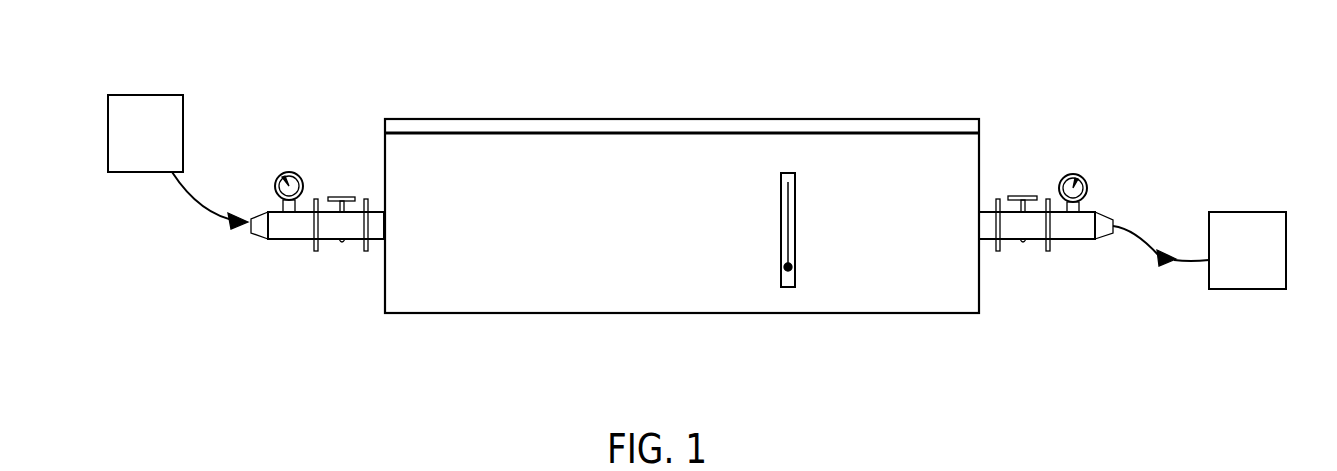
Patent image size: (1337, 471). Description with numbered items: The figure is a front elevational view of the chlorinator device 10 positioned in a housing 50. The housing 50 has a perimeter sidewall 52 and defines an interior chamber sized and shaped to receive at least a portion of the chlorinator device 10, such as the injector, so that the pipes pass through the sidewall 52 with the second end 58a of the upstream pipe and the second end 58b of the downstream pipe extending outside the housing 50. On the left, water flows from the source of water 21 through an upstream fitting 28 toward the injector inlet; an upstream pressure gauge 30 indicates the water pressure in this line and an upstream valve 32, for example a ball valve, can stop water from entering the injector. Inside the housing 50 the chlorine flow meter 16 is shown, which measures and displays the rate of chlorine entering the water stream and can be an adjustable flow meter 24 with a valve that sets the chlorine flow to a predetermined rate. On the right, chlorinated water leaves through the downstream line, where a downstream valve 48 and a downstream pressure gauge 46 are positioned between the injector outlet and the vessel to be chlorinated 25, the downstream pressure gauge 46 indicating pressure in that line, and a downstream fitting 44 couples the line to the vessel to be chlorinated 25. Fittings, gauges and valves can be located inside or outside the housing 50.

The chlorinator device 10 is at (1013, 93).
The source of water 21 is at (135, 147).
The vessel to be chlorinated 25 is at (1237, 264).
The upstream fitting 28 is at (248, 227).
The upstream pressure gauge 30 is at (294, 173).
The upstream valve 32 is at (342, 243).
The second end of upstream pipe 58a is at (375, 233).
The housing 50 is at (682, 313).
The perimeter sidewall 52 is at (533, 288).
The chlorine flow meter 16 is at (780, 198).
The adjustable flow meter 24 is at (796, 245).
The second end of downstream pipe 58b is at (985, 222).
The downstream valve 48 is at (1032, 240).
The downstream pressure gauge 46 is at (1080, 171).
The downstream fitting 44 is at (1105, 212).